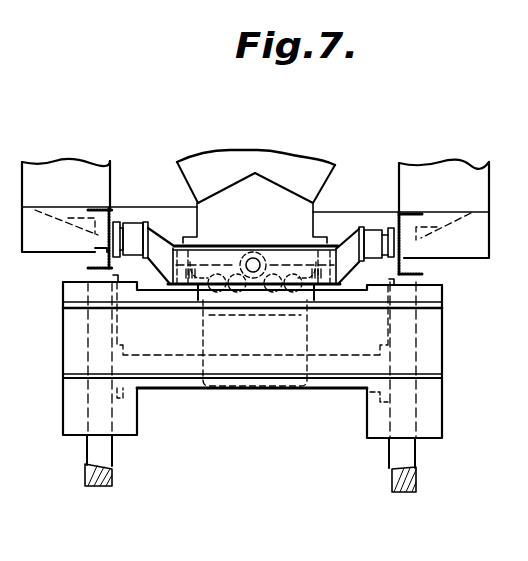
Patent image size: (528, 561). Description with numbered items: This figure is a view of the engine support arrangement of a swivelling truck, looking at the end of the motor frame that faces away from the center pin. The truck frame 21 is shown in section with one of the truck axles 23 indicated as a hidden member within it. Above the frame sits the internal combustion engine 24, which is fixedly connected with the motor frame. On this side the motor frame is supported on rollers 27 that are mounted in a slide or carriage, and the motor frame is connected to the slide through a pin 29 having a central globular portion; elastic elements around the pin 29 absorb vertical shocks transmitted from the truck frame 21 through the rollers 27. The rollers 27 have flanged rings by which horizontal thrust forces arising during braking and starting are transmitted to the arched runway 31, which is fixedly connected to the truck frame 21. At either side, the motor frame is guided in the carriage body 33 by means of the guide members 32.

The truck frame 21 is at (433, 345).
The truck axle 23 is at (310, 388).
The internal combustion engine 24 is at (298, 163).
The rollers 27 is at (293, 293).
The pin 29 is at (251, 257).
The arched runway 31 is at (330, 303).
The guide members 32 is at (133, 232).
The carriage body 33 is at (70, 212).